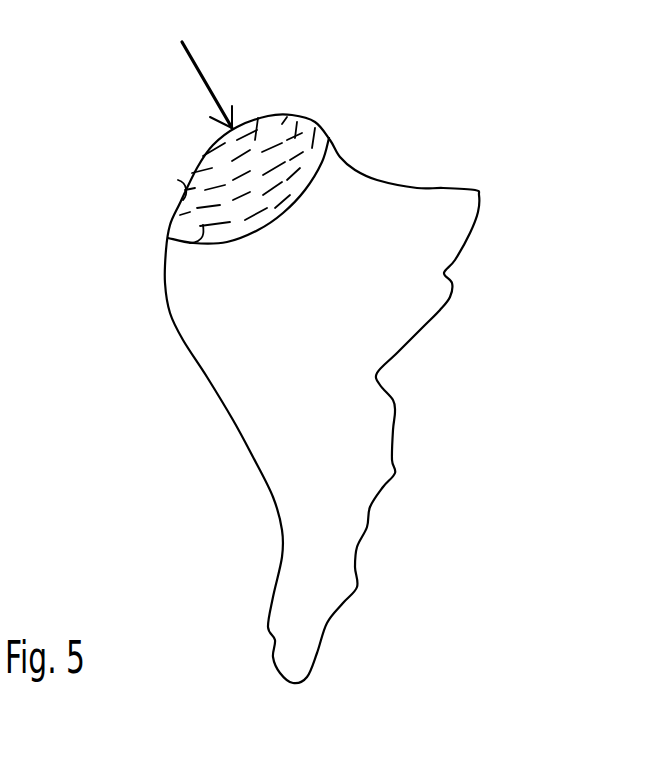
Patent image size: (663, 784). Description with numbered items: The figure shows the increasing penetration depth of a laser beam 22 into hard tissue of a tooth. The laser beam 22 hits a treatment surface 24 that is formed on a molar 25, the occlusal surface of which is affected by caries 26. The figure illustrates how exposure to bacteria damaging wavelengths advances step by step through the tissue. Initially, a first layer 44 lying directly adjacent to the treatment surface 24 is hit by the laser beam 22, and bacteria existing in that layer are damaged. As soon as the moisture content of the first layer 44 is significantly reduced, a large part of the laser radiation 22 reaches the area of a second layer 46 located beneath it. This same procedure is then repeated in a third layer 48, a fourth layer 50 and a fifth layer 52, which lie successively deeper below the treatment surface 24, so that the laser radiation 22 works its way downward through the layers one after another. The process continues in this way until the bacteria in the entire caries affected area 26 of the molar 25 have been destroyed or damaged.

The laser beam 22 is at (191, 51).
The treatment surface 24 is at (142, 130).
The molar 25 is at (395, 316).
The caries 26 is at (158, 59).
The first layer 44 is at (226, 139).
The second layer 46 is at (258, 118).
The third layer 48 is at (287, 117).
The fourth layer 50 is at (178, 180).
The fifth layer 52 is at (190, 243).